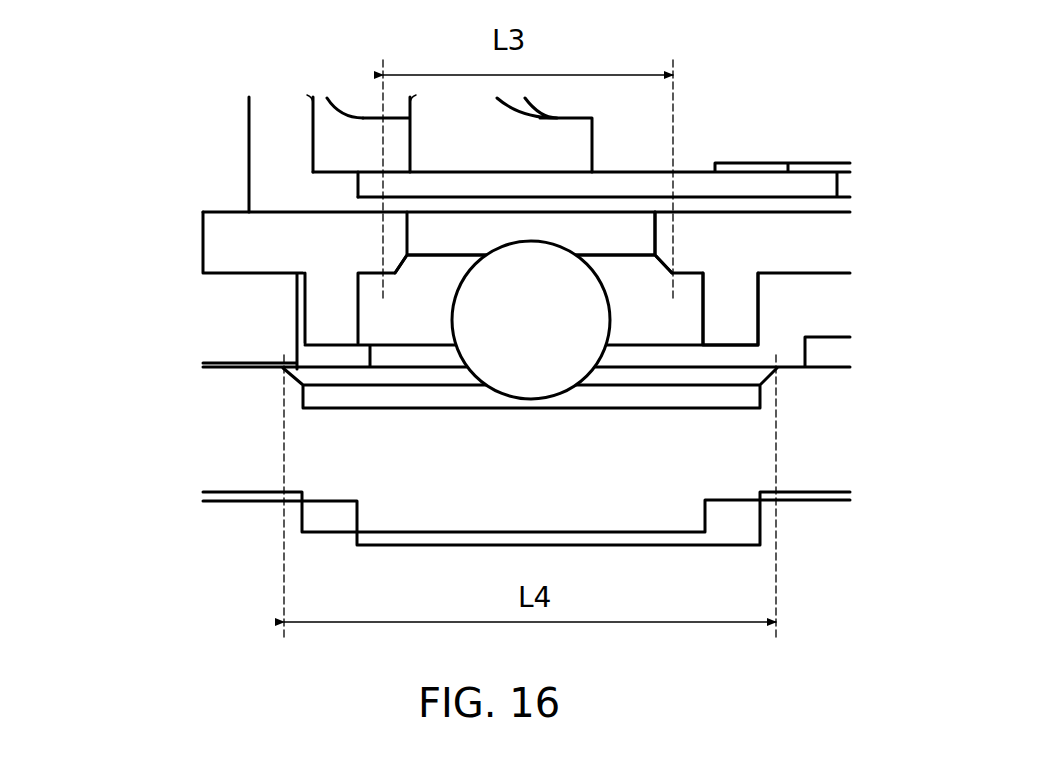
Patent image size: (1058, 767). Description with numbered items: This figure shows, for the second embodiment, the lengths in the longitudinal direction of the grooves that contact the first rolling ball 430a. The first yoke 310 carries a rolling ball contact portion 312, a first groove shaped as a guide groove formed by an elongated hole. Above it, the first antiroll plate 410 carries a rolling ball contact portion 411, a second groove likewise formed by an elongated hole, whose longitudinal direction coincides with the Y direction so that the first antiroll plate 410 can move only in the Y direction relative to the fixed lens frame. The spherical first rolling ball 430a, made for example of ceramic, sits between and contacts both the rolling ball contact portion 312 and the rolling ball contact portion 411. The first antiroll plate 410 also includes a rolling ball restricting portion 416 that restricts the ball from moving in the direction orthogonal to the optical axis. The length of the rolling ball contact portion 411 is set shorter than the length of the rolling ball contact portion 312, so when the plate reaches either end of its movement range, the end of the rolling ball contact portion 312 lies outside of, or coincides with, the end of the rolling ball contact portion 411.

The first antiroll plate 410 is at (230, 242).
The rolling ball contact portion (second groove) 411 is at (643, 268).
The rolling ball restricting portion 416 is at (705, 313).
The first rolling ball (rolling member) 430a is at (483, 305).
The rolling ball contact portion (first groove) 312 is at (313, 375).
The first yoke 310 is at (810, 453).